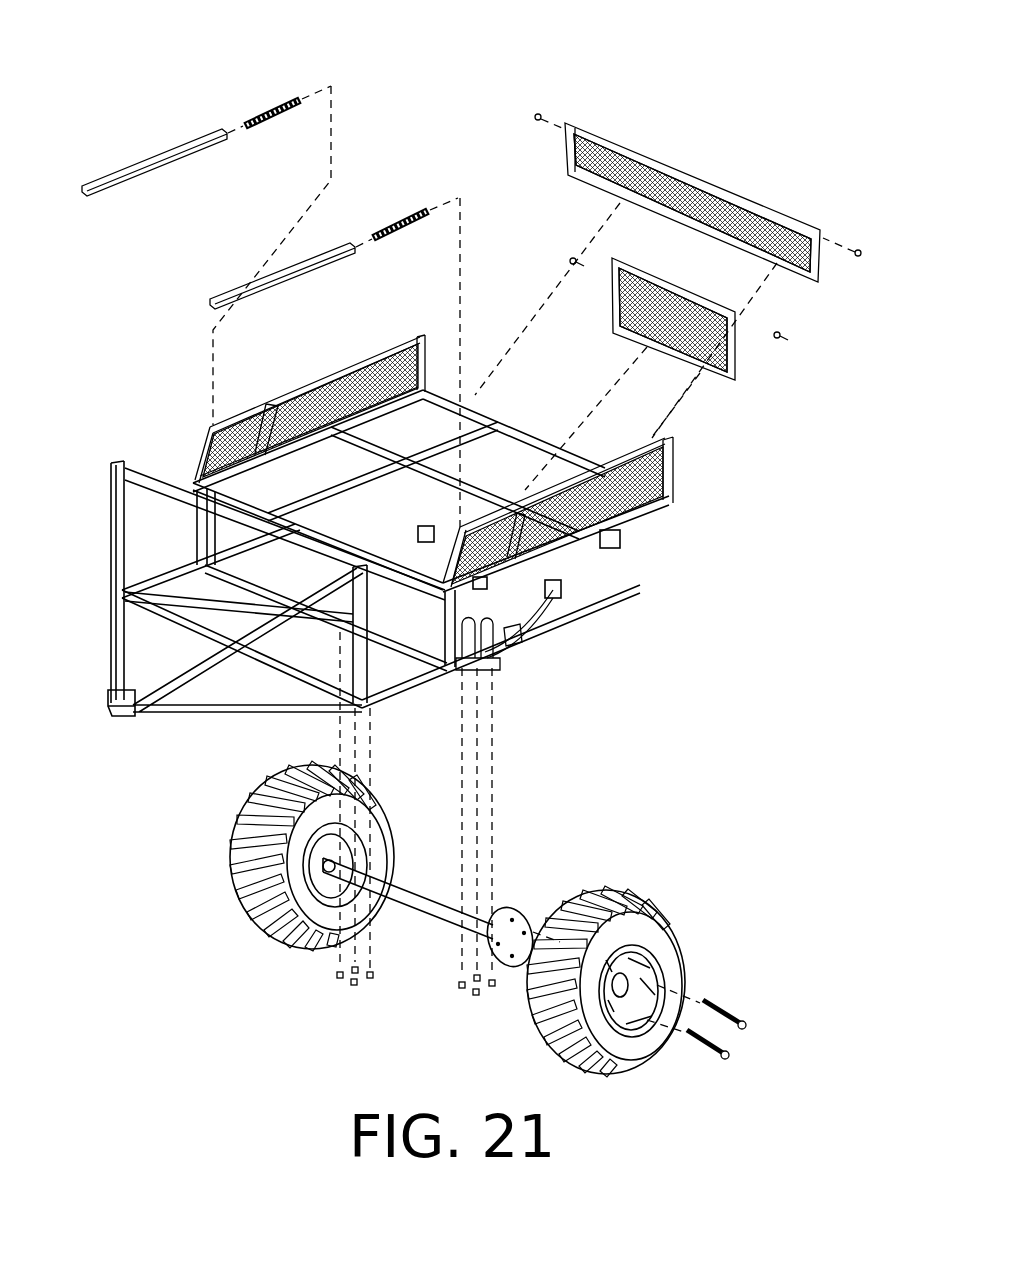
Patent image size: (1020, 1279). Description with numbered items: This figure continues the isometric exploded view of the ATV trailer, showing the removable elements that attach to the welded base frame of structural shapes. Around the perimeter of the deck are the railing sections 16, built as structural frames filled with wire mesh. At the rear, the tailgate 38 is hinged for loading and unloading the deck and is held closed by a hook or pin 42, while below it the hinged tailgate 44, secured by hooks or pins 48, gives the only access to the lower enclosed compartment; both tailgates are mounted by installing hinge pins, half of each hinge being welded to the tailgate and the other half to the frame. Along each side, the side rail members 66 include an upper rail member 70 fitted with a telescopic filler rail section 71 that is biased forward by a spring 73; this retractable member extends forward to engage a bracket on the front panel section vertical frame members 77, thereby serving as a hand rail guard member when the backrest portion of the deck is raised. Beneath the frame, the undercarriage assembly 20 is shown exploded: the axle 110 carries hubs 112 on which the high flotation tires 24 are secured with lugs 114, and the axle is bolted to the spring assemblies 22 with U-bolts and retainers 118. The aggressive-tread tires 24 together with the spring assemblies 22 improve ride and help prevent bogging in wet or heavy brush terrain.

The railing sections 16 is at (517, 637).
The undercarriage assembly 20 is at (717, 910).
The spring assemblies 22 is at (570, 618).
The high flotation tires 24 is at (690, 985).
The tailgate 38 is at (718, 183).
The hook or pin 42 is at (547, 117).
The hinged tailgate 44 is at (737, 373).
The hooks or pins 48 is at (572, 258).
The side rail members 66 is at (418, 350).
The upper rail member 70 is at (313, 372).
The telescopic filler rail section 71 is at (140, 160).
The spring 73 is at (283, 99).
The front panel section vertical frame members 77 is at (112, 523).
The axle 110 is at (427, 910).
The hubs 112 is at (525, 910).
The lugs 114 is at (740, 1025).
The retainers 118 is at (353, 985).